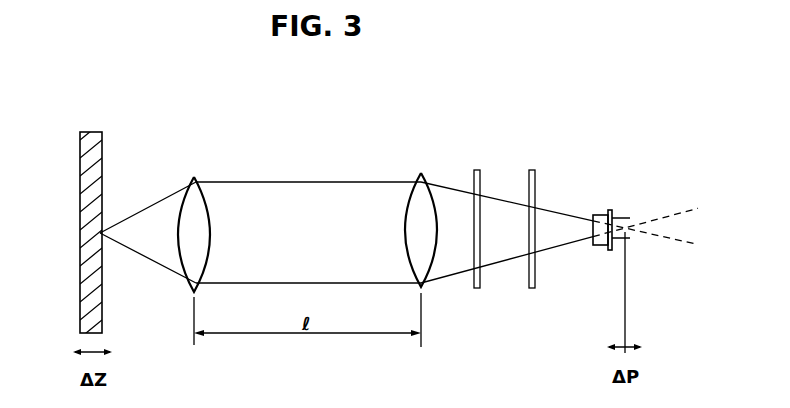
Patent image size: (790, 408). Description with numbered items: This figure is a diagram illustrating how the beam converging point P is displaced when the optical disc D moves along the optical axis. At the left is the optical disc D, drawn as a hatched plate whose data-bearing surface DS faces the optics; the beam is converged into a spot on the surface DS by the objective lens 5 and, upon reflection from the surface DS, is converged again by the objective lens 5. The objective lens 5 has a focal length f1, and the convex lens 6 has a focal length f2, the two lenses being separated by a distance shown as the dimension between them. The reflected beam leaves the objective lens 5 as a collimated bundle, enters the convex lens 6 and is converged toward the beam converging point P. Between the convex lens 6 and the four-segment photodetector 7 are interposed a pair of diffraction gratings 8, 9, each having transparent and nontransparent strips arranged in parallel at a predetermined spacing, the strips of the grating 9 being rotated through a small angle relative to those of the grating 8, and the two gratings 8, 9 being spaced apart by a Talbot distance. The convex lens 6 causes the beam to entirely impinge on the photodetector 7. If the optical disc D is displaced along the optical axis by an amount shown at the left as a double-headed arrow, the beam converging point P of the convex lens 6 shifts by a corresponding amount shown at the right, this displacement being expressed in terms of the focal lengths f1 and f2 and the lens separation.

The optical disc D is at (80, 177).
The data-bearing surface DS is at (106, 299).
The objective lens 5 is at (197, 177).
The convex lens 6 is at (428, 173).
The four-segment photodetector 7 is at (601, 245).
The diffraction grating 8 is at (476, 288).
The diffraction grating 9 is at (531, 288).
The beam converging point P is at (631, 227).
The focal length of the objective lens f1 is at (196, 163).
The focal length of the convex lens f2 is at (429, 168).